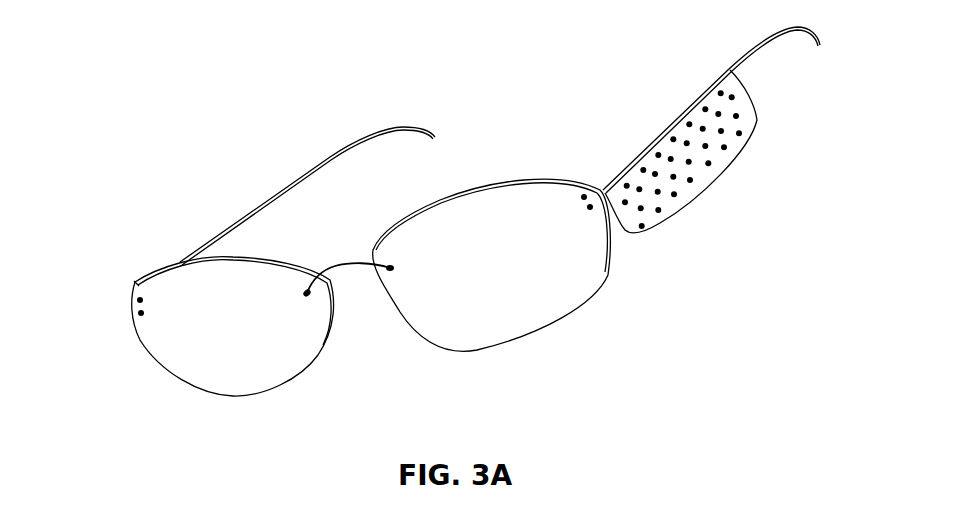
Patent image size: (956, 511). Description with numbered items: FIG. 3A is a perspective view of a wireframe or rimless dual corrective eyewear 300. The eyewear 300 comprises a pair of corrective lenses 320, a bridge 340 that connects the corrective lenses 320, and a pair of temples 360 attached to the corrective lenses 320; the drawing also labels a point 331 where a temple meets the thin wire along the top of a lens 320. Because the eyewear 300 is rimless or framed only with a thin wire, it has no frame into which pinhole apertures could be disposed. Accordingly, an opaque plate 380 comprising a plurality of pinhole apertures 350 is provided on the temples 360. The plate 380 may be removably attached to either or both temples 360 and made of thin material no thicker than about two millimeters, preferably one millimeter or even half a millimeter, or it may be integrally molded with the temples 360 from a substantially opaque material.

The dual corrective eyewear 300 is at (143, 72).
The corrective lens 320 is at (183, 365).
The rim end / temple attachment 331 is at (137, 282).
The bridge 340 is at (345, 268).
The pinhole apertures 350 is at (710, 163).
The temples 360 is at (333, 153).
The opaque plate 380 is at (757, 120).